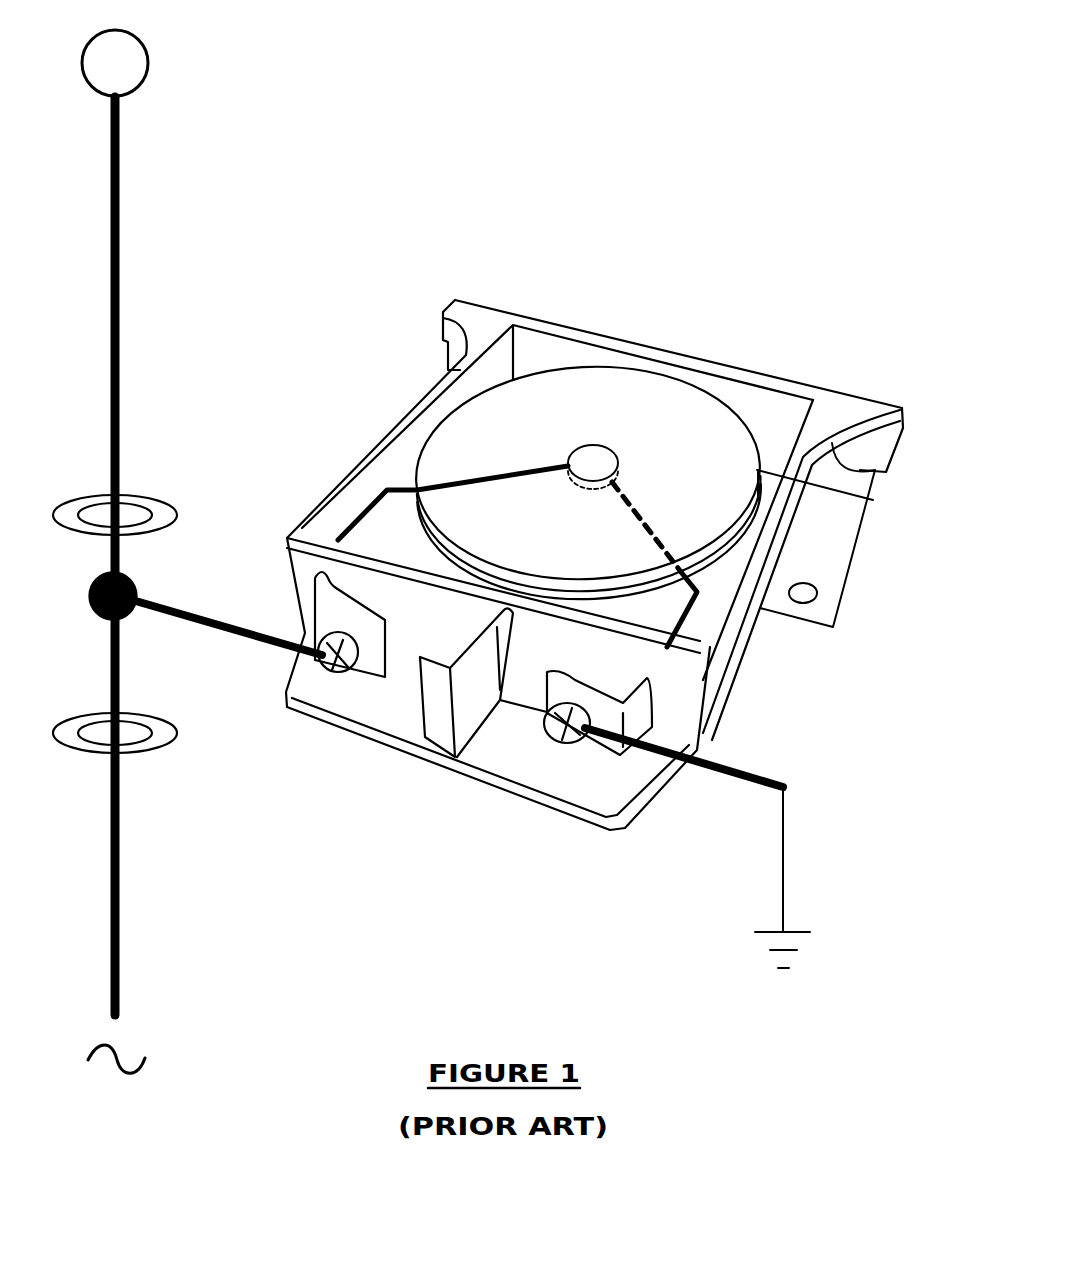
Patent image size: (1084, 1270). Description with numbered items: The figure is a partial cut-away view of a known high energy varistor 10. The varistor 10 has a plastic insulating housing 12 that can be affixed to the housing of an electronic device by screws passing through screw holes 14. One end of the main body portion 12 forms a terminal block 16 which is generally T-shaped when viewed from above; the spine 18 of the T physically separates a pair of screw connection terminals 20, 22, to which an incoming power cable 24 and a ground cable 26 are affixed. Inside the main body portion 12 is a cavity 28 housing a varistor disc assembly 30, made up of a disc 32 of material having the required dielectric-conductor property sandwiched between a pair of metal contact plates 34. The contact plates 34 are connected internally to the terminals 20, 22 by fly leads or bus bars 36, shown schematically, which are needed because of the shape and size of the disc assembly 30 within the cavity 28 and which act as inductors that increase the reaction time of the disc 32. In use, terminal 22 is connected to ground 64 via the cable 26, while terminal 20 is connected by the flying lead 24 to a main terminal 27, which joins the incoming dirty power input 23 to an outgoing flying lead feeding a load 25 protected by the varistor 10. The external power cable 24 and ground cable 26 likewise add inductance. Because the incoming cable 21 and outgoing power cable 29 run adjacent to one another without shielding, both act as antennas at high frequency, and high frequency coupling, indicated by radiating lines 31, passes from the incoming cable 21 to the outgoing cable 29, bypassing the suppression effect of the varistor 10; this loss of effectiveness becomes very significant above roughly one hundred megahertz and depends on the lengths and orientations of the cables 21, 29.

The high energy varistor 10 is at (410, 200).
The plastic insulating housing 12 is at (765, 382).
The screw holes 14 is at (858, 453).
The terminal block 16 is at (302, 566).
The spine 18 is at (438, 723).
The screw connection terminal 20 is at (328, 662).
The screw connection terminal 22 is at (563, 745).
The incoming power cable 24 is at (223, 636).
The ground cable 26 is at (731, 773).
The load 25 is at (120, 68).
The main terminal 27 is at (133, 580).
The outgoing power cable 29 is at (120, 284).
The incoming power cable 21 is at (122, 822).
The dirty power input 23 is at (116, 1080).
The radiating lines 31 is at (145, 500).
The cavity 28 is at (532, 352).
The varistor disc assembly 30 is at (589, 483).
The disc 32 is at (533, 590).
The metal contact plates 34 is at (723, 567).
The fly leads or bus bars 36 is at (375, 500).
The ground 64 is at (797, 942).